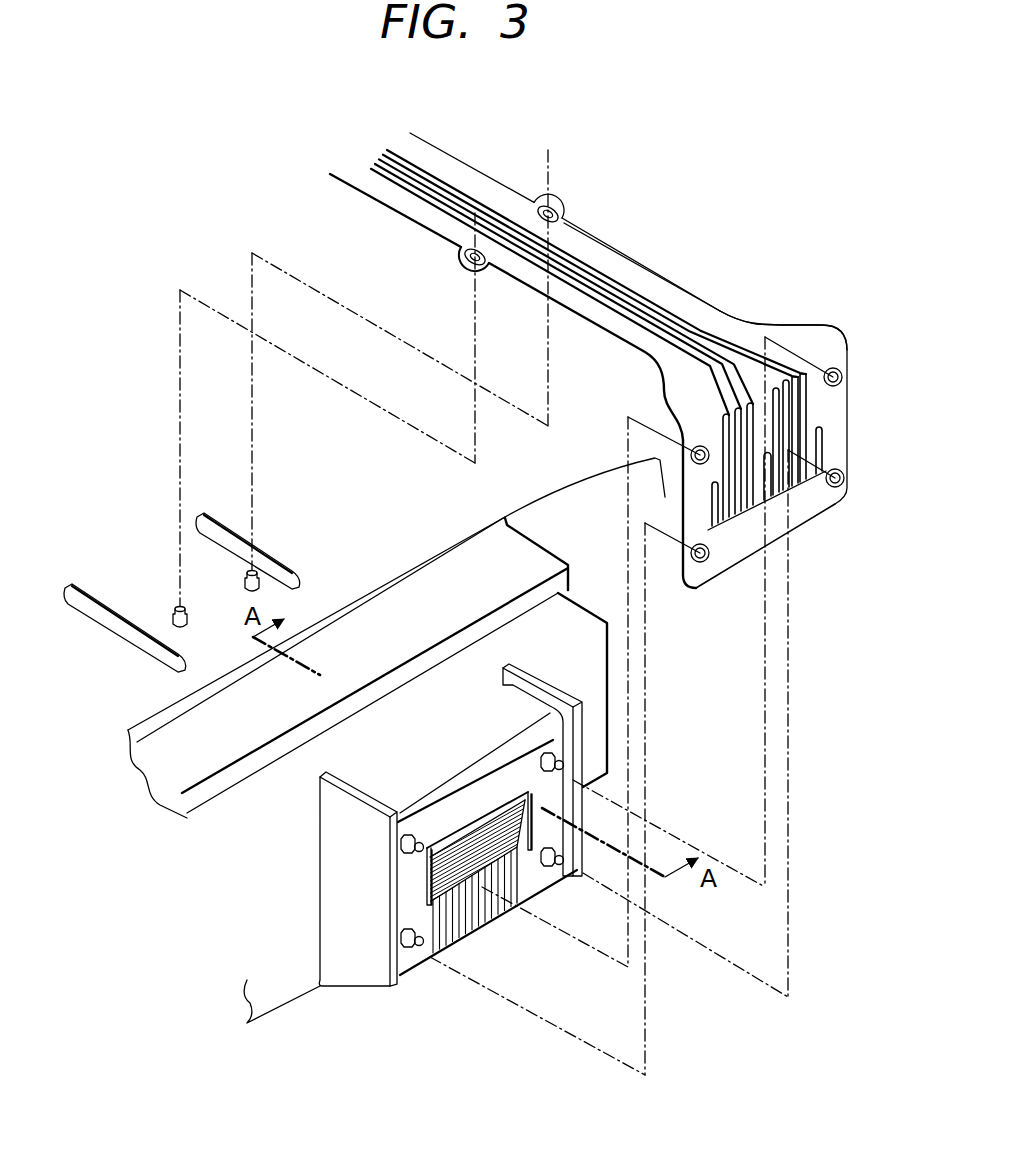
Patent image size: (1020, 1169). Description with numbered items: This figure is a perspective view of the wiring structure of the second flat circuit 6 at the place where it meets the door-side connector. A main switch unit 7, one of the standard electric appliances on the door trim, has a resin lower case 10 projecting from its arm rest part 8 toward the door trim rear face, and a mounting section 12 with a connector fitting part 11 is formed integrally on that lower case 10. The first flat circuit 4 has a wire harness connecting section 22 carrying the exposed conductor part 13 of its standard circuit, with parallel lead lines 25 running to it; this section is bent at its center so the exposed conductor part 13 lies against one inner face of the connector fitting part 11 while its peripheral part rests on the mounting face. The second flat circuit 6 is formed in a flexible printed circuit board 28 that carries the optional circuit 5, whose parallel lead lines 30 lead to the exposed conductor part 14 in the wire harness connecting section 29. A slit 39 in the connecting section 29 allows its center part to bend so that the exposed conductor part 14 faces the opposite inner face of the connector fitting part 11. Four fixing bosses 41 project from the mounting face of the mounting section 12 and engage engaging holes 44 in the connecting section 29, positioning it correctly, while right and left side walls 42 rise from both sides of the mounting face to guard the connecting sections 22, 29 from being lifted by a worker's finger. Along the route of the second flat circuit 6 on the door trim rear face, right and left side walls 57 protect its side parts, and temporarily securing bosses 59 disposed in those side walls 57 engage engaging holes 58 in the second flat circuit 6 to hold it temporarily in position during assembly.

The first flat circuit 4 is at (410, 917).
The optional circuit 5 is at (641, 284).
The second flat circuit 6 is at (608, 242).
The main switch unit 7 is at (195, 726).
The arm rest part 8 is at (586, 492).
The resin lower case 10 is at (577, 621).
The connector fitting part 11 is at (490, 813).
The mounting section 12 is at (378, 1000).
The exposed conductor part 13 is at (443, 877).
The exposed conductor part 14 is at (820, 480).
The wire harness connecting section 22 is at (421, 979).
The lead lines 25 is at (490, 905).
The flexible printed circuit board 28 is at (700, 300).
The wire harness connecting section 29 is at (718, 560).
The lead lines 30 is at (447, 177).
The slit 39 is at (797, 490).
The fixing bosses 41 is at (412, 830).
The side walls 42 is at (347, 846).
The engaging holes 44 is at (845, 357).
The side walls 57 is at (277, 548).
The engaging holes 58 is at (565, 208).
The temporarily securing bosses 59 is at (172, 613).